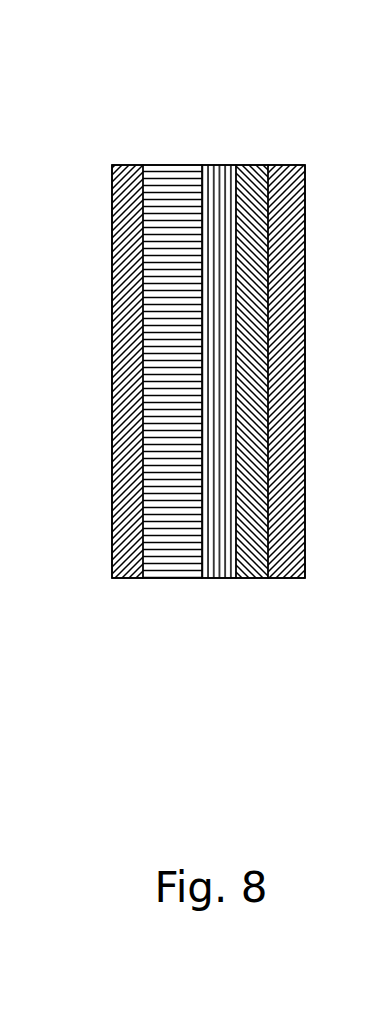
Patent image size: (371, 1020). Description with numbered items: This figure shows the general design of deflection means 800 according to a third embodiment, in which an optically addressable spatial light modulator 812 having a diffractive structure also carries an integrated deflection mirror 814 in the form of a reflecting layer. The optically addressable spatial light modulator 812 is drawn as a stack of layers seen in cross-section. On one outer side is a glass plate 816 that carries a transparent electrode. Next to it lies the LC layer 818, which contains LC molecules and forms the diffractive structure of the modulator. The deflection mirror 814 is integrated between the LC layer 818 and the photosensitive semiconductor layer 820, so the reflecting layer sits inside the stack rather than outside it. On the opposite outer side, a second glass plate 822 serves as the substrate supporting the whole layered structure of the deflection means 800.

The deflection means 800 is at (208, 299).
The optically addressable spatial light modulator 812 is at (182, 340).
The deflection mirror 814 is at (215, 580).
The glass plate 816 is at (115, 580).
The LC layer 818 is at (163, 580).
The photosensitive semiconductor layer 820 is at (263, 580).
The glass plate 822 is at (290, 580).